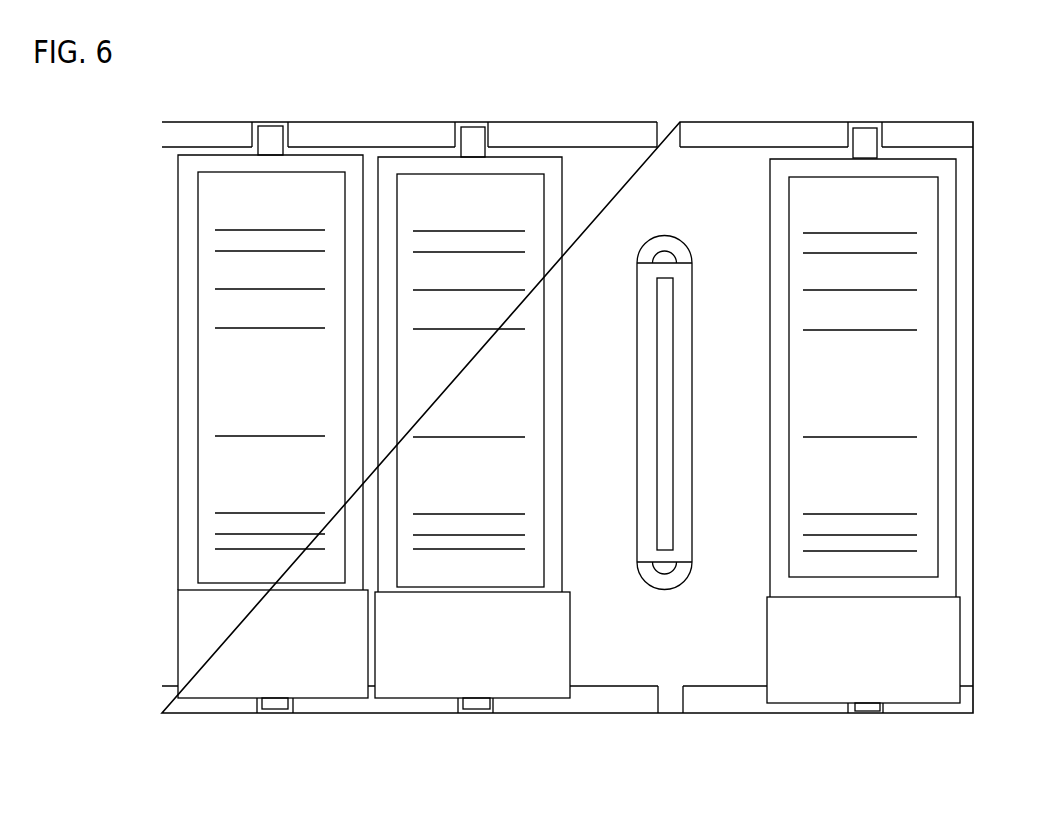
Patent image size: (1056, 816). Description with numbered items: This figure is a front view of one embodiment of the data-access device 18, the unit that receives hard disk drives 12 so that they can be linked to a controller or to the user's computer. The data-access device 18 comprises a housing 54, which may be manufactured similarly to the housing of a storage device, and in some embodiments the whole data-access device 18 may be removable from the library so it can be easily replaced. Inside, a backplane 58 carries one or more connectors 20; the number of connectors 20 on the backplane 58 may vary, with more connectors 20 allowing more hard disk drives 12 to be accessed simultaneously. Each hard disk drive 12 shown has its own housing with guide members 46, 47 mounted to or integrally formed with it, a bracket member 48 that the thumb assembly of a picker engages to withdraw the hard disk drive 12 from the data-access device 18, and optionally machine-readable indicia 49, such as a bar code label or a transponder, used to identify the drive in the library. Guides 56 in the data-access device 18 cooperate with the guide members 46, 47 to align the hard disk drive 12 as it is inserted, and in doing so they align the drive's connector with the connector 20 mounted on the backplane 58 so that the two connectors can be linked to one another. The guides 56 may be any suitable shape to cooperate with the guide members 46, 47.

The hard disk drive 12 is at (562, 215).
The data-access device 18 is at (922, 95).
The connector 20 is at (692, 318).
The guide member 46 is at (473, 126).
The guide member 47 is at (497, 709).
The bracket member 48 is at (370, 697).
The machine-readable indicia 49 is at (562, 381).
The housing 54 is at (708, 121).
The guides 56 is at (660, 706).
The backplane 58 is at (717, 648).